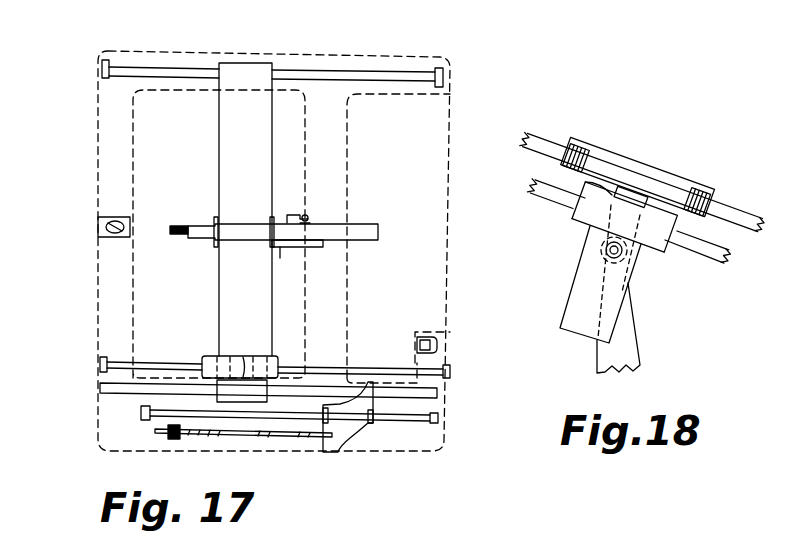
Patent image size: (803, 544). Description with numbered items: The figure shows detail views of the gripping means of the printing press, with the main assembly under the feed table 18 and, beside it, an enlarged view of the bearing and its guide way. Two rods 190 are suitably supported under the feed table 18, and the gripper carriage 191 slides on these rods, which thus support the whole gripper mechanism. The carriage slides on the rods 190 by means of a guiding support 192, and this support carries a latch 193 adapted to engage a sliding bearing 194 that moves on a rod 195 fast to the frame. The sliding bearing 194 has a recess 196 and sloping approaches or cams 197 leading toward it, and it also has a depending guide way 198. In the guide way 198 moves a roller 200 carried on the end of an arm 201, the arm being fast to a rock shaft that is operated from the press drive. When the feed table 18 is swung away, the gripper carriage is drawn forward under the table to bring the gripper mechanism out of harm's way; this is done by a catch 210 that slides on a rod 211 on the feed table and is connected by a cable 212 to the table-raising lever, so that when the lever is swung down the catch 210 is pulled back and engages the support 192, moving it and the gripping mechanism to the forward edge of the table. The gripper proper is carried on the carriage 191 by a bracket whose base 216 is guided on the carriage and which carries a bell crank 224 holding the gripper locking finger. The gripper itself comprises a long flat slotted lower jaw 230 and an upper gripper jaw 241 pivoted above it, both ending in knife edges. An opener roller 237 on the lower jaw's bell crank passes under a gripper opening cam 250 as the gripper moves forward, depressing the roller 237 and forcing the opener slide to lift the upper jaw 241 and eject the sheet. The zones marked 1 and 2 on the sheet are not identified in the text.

In FIG. 17, the zone 1 is at (40, 157).
In FIG. 17, the zone 2 is at (427, 170).
In FIG. 17, the feed table 18 is at (348, 150).
In FIG. 18, the rods 190 is at (538, 135).
In FIG. 17, the gripper carriage 191 is at (245, 209).
In FIG. 17, the guiding support 192 is at (236, 358).
In FIG. 18, the guiding support 192 is at (678, 177).
In FIG. 17, the latch 193 is at (243, 357).
In FIG. 18, the latch 193 is at (630, 193).
In FIG. 17, the sliding bearing 194 is at (242, 392).
In FIG. 18, the sliding bearing 194 is at (583, 212).
In FIG. 17, the rod 195 is at (105, 395).
In FIG. 18, the rod 195 is at (533, 186).
In FIG. 18, the recess 196 is at (587, 223).
In FIG. 18, the sloping approaches or cams 197 is at (597, 177).
In FIG. 18, the depending guide way 198 is at (583, 297).
In FIG. 18, the roller 200 is at (627, 281).
In FIG. 18, the arm 201 is at (617, 343).
In FIG. 17, the catch 210 is at (348, 424).
In FIG. 17, the rod 211 is at (407, 420).
In FIG. 17, the cable 212 is at (230, 436).
In FIG. 17, the base 216 is at (280, 250).
In FIG. 17, the bell crank 224 is at (288, 218).
In FIG. 17, the lower jaw 230 is at (363, 240).
In FIG. 17, the opener roller 237 is at (176, 236).
In FIG. 17, the upper gripper jaw 241 is at (333, 235).
In FIG. 17, the gripper opening cam 250 is at (98, 228).